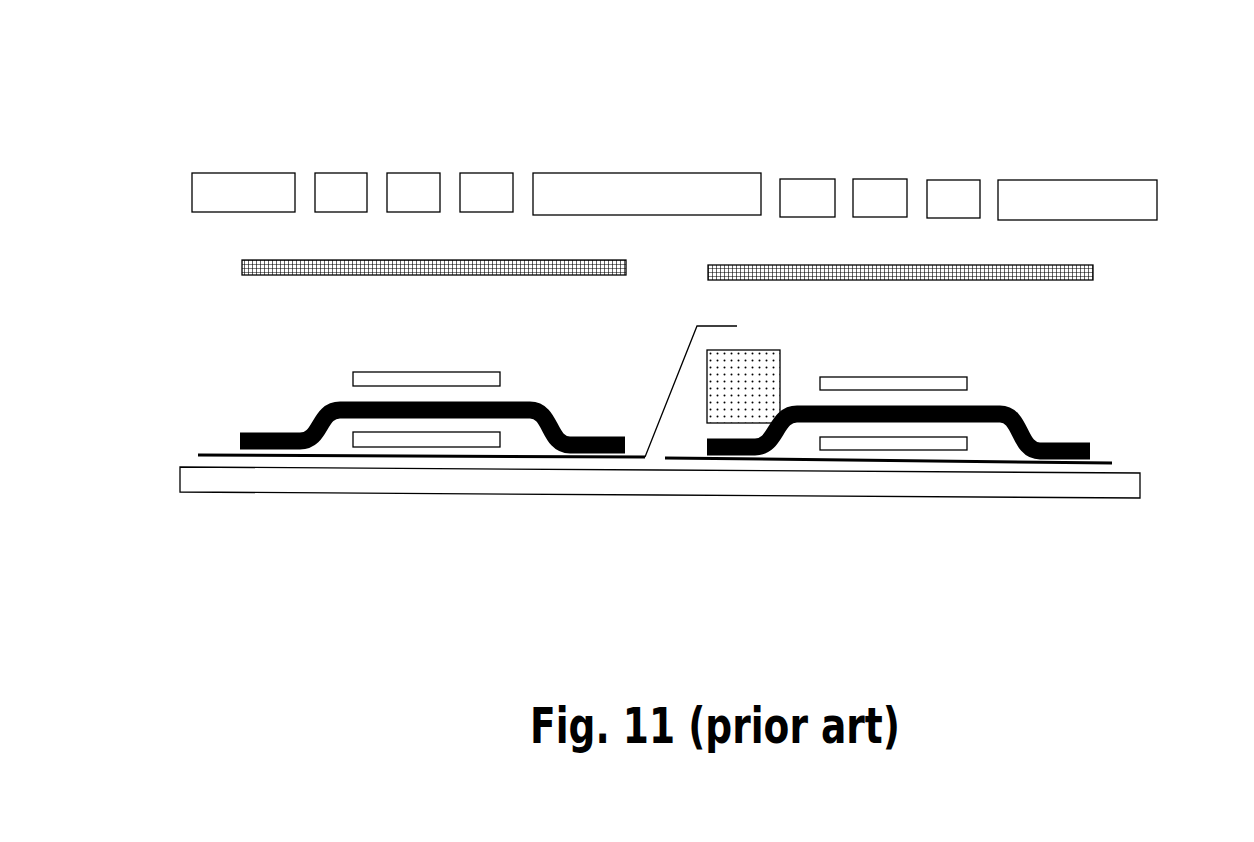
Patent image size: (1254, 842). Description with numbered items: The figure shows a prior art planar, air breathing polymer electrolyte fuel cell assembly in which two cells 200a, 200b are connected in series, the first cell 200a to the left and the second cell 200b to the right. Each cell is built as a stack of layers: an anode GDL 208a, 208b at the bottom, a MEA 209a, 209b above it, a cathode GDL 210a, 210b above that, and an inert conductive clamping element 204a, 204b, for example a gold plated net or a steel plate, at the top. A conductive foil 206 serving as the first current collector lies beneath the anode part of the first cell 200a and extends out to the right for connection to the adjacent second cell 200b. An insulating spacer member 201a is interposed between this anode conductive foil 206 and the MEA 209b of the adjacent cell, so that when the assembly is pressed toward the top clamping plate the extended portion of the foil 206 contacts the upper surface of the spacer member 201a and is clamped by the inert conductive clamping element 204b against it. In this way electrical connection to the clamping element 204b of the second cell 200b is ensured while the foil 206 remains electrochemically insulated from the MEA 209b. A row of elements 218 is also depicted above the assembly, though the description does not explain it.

The first cell 200a is at (362, 531).
The second cell 200b is at (913, 523).
The insulating spacer member 201a is at (737, 408).
The inert conductive clamping element 204a is at (302, 258).
The inert conductive clamping element 204b is at (843, 263).
The conductive foil 206 is at (518, 460).
The anode GDL 208a is at (390, 448).
The anode GDL 208b is at (970, 452).
The MEA 209a is at (238, 442).
The MEA 209b is at (1094, 448).
The cathode GDL 210a is at (351, 371).
The cathode GDL 210b is at (970, 377).
The pixel elements 218 is at (1053, 177).